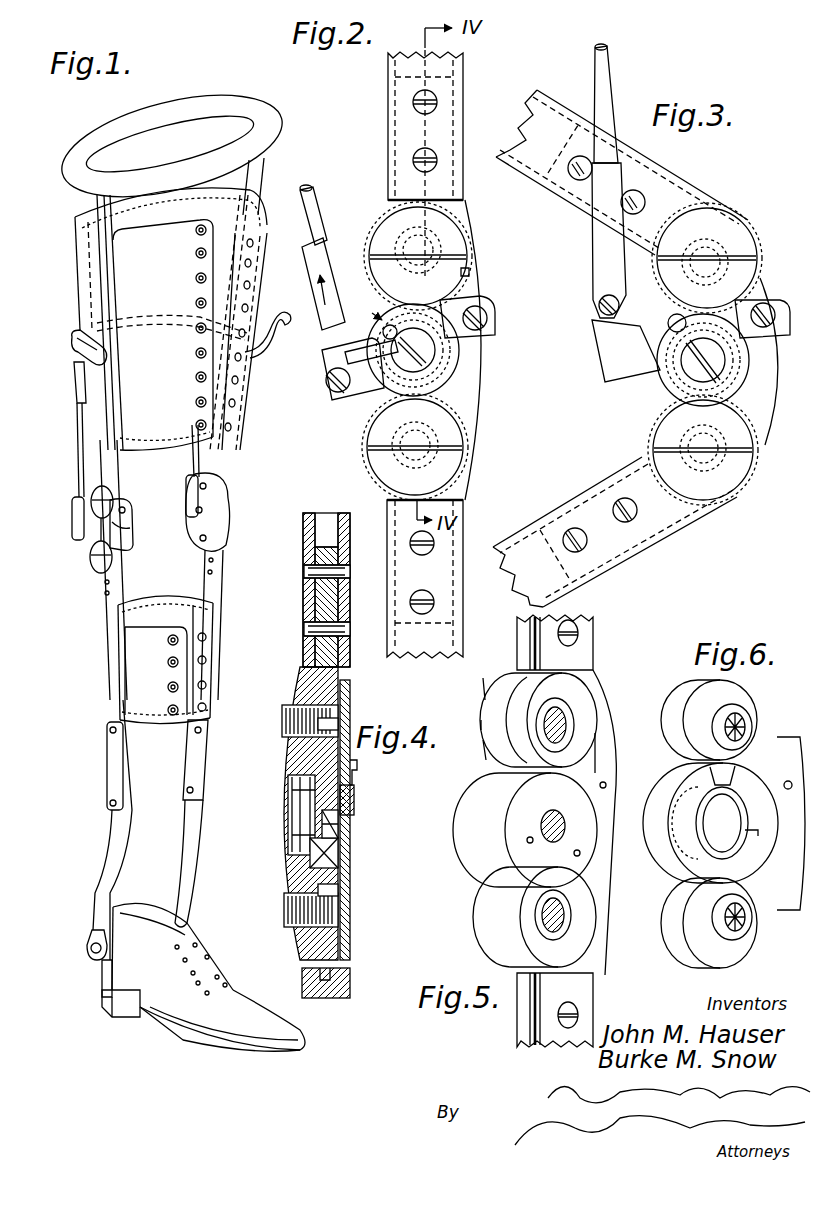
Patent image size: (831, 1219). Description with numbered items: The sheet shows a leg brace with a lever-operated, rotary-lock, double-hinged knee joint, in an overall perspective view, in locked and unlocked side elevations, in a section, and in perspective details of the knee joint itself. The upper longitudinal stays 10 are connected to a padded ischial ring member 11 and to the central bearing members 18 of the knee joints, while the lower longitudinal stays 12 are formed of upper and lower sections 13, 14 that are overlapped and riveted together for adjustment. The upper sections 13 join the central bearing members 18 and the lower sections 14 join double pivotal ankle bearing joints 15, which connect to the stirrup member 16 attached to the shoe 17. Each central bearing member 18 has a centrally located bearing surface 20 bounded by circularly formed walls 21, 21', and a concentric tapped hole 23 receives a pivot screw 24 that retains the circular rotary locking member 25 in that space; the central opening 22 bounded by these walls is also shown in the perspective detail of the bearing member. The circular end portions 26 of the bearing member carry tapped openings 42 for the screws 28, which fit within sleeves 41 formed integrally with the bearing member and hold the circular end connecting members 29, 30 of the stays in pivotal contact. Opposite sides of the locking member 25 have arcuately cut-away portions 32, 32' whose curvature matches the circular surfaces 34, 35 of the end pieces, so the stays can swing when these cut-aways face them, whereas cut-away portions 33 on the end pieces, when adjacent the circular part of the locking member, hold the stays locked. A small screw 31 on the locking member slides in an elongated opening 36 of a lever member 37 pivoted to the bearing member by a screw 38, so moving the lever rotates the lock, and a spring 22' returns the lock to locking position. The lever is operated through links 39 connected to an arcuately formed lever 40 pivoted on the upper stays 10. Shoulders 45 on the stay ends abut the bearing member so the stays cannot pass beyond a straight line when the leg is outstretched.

In FIG. 1, the upper longitudinal stays 10 is at (97, 262).
In FIG. 2, the upper longitudinal stays 10 is at (388, 74).
In FIG. 3, the upper longitudinal stays 10 is at (540, 118).
In FIG. 4, the upper longitudinal stays 10 is at (320, 530).
In FIG. 5, the upper longitudinal stays 10 is at (580, 643).
In FIG. 1, the padded ischial ring member 11 is at (80, 190).
In FIG. 1, the lower longitudinal stays 12 is at (108, 704).
In FIG. 1, the upper sections 13 is at (110, 620).
In FIG. 2, the upper sections 13 is at (443, 638).
In FIG. 3, the upper sections 13 is at (553, 583).
In FIG. 4, the upper sections 13 is at (345, 998).
In FIG. 5, the upper sections 13 is at (530, 1037).
In FIG. 1, the lower sections 14 is at (110, 785).
In FIG. 1, the double pivotal ankle bearing joints 15 is at (197, 920).
In FIG. 1, the stirrup member 16 is at (100, 973).
In FIG. 1, the shoe 17 is at (215, 1032).
In FIG. 1, the central bearing member 18 is at (133, 512).
In FIG. 2, the central bearing member 18 is at (494, 380).
In FIG. 3, the central bearing member 18 is at (784, 363).
In FIG. 4, the central bearing member 18 is at (277, 770).
In FIG. 5, the central bearing member 18 is at (600, 757).
In FIG. 6, the central bearing member 18 is at (790, 738).
In FIG. 4, the bearing surface 20 is at (313, 863).
In FIG. 6, the bearing surface 20 is at (753, 847).
In FIG. 2, the circularly formed wall 21 is at (400, 339).
In FIG. 3, the circularly formed wall 21 is at (671, 360).
In FIG. 4, the circularly formed wall 21 is at (275, 816).
In FIG. 5, the circularly formed wall 21 is at (527, 830).
In FIG. 6, the circularly formed wall 21 is at (731, 830).
In FIG. 2, the circularly formed wall 21' is at (494, 397).
In FIG. 3, the circularly formed wall 21' is at (781, 390).
In FIG. 5, the circularly formed wall 21' is at (595, 870).
In FIG. 6, the circularly formed wall 21' is at (783, 877).
In FIG. 4, the central opening 22 is at (359, 832).
In FIG. 6, the central opening 22 is at (710, 805).
In FIG. 4, the spring 22' is at (378, 822).
In FIG. 6, the spring 22' is at (696, 827).
In FIG. 4, the tapped hole 23 is at (280, 803).
In FIG. 2, the pivot screw 24 is at (480, 290).
In FIG. 3, the pivot screw 24 is at (683, 370).
In FIG. 4, the pivot screw 24 is at (280, 837).
In FIG. 5, the pivot screw 24 is at (557, 808).
In FIG. 2, the rotary locking member 25 is at (437, 397).
In FIG. 3, the rotary locking member 25 is at (757, 407).
In FIG. 4, the rotary locking member 25 is at (338, 863).
In FIG. 5, the rotary locking member 25 is at (473, 873).
In FIG. 1, the end portions 26 is at (120, 495).
In FIG. 2, the end portions 26 is at (467, 222).
In FIG. 3, the end portions 26 is at (705, 210).
In FIG. 4, the end portions 26 is at (303, 672).
In FIG. 5, the end portions 26 is at (503, 677).
In FIG. 6, the end portions 26 is at (687, 680).
In FIG. 1, the screws 28 is at (91, 498).
In FIG. 2, the screws 28 is at (445, 241).
In FIG. 3, the screws 28 is at (710, 223).
In FIG. 4, the screws 28 is at (330, 723).
In FIG. 5, the screws 28 is at (563, 720).
In FIG. 1, the end connecting member 29 is at (98, 477).
In FIG. 2, the end connecting member 29 is at (453, 216).
In FIG. 3, the end connecting member 29 is at (697, 205).
In FIG. 4, the end connecting member 29 is at (320, 608).
In FIG. 5, the end connecting member 29 is at (580, 678).
In FIG. 1, the end connecting member 30 is at (100, 580).
In FIG. 2, the end connecting member 30 is at (455, 498).
In FIG. 3, the end connecting member 30 is at (683, 510).
In FIG. 4, the end connecting member 30 is at (350, 977).
In FIG. 5, the end connecting member 30 is at (590, 947).
In FIG. 2, the small screw 31 is at (330, 368).
In FIG. 3, the small screw 31 is at (668, 340).
In FIG. 2, the arcuately cut-away portion 32 is at (339, 369).
In FIG. 3, the arcuately cut-away portion 32 is at (697, 323).
In FIG. 5, the arcuately cut-away portion 32 is at (495, 792).
In FIG. 2, the arcuately cut-away portion 32' is at (498, 342).
In FIG. 3, the arcuately cut-away portion 32' is at (653, 405).
In FIG. 5, the arcuately cut-away portion 32' is at (626, 874).
In FIG. 2, the arcuately cut-away portions 33 is at (403, 403).
In FIG. 3, the arcuately cut-away portions 33 is at (755, 263).
In FIG. 5, the arcuately cut-away portions 33 is at (560, 768).
In FIG. 2, the circular surface 34 is at (470, 273).
In FIG. 3, the circular surface 34 is at (757, 247).
In FIG. 5, the circular surface 34 is at (510, 710).
In FIG. 2, the circular surface 35 is at (363, 438).
In FIG. 3, the circular surface 35 is at (657, 423).
In FIG. 5, the circular surface 35 is at (510, 893).
In FIG. 2, the elongated opening 36 is at (467, 362).
In FIG. 3, the elongated opening 36 is at (643, 333).
In FIG. 1, the lever member 37 is at (85, 530).
In FIG. 2, the lever member 37 is at (493, 323).
In FIG. 3, the lever member 37 is at (781, 318).
In FIG. 4, the lever member 37 is at (355, 803).
In FIG. 2, the screw 38 is at (485, 305).
In FIG. 3, the screw 38 is at (768, 300).
In FIG. 4, the screw 38 is at (357, 768).
In FIG. 1, the links 39 is at (77, 420).
In FIG. 2, the links 39 is at (312, 213).
In FIG. 3, the links 39 is at (597, 68).
In FIG. 1, the arcuately formed lever 40 is at (76, 336).
In FIG. 4, the sleeves 41 is at (332, 720).
In FIG. 5, the sleeves 41 is at (567, 730).
In FIG. 6, the sleeves 41 is at (740, 717).
In FIG. 4, the tapped openings 42 is at (283, 730).
In FIG. 5, the tapped openings 42 is at (557, 707).
In FIG. 6, the tapped openings 42 is at (745, 720).
In FIG. 2, the shoulders 45 is at (467, 267).
In FIG. 3, the shoulders 45 is at (757, 243).
In FIG. 5, the shoulders 45 is at (592, 927).